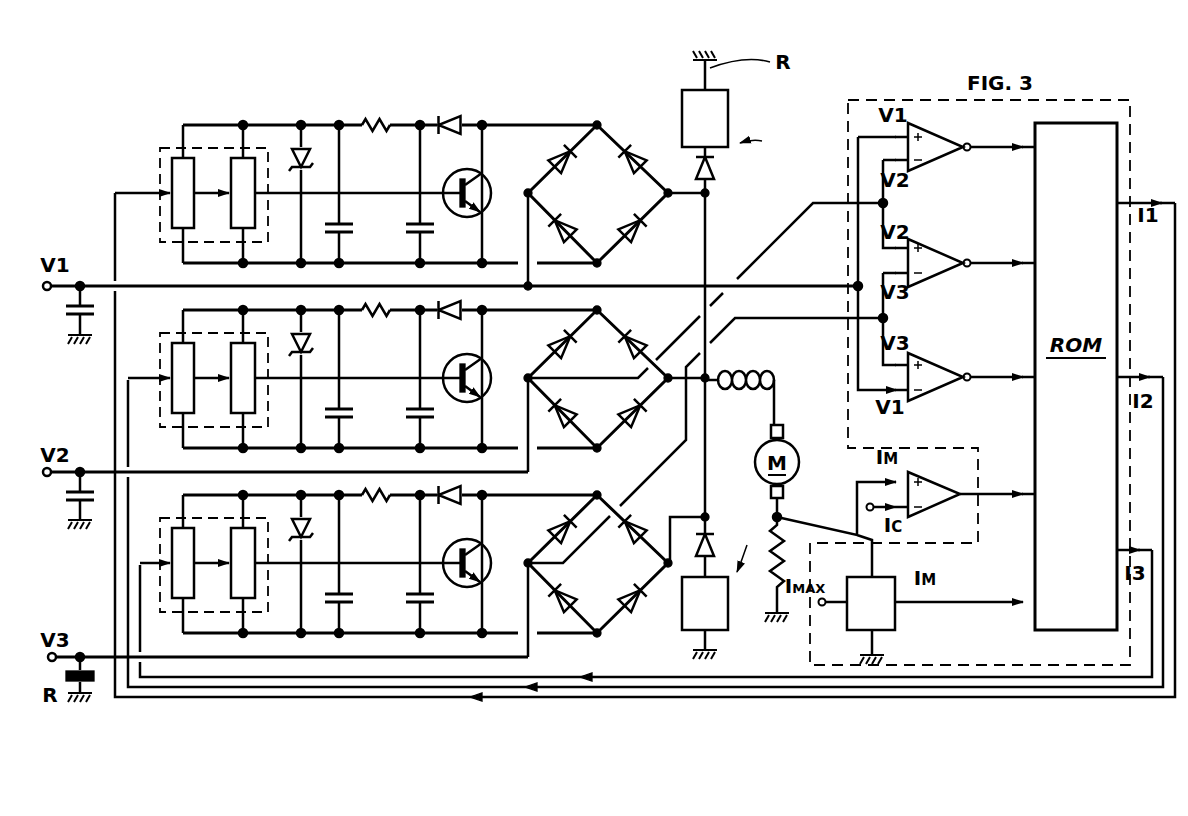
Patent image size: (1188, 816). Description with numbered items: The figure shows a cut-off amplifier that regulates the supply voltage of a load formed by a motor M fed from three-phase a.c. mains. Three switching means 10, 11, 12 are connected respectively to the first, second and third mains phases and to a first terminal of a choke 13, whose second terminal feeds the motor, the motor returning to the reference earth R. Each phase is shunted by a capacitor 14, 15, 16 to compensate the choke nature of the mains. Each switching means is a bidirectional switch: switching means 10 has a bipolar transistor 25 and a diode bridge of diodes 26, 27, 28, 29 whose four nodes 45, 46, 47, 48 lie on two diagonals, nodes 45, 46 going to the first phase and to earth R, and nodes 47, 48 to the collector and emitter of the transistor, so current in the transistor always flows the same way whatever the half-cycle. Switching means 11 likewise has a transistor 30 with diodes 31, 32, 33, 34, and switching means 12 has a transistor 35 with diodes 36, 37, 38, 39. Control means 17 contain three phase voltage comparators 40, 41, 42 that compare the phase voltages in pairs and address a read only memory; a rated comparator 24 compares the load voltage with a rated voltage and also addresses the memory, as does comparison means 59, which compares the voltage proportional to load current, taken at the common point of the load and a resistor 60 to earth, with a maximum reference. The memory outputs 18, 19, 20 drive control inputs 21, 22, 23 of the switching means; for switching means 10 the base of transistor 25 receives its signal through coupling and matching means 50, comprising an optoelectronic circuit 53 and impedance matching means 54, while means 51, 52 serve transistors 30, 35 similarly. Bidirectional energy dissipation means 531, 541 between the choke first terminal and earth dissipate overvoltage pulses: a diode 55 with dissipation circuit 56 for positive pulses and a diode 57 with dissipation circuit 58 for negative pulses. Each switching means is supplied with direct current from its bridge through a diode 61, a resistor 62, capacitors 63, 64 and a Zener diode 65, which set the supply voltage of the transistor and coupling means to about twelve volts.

The switching means 10 is at (599, 178).
The switching means 11 is at (600, 383).
The switching means 12 is at (603, 574).
The choke 13 is at (768, 372).
The shunt capacitor 14 is at (78, 318).
The shunt capacitor 15 is at (78, 502).
The shunt capacitor 16 is at (84, 654).
The control means 17 is at (848, 104).
The output of the control means 18 is at (1172, 200).
The output of the control means 19 is at (1162, 374).
The output of the control means 20 is at (1154, 547).
The control input 21 is at (113, 200).
The control input 22 is at (130, 400).
The control input 23 is at (141, 600).
The rated comparator 24 is at (945, 500).
The bipolar transistor 25 is at (470, 172).
The diode 26 is at (566, 158).
The diode 27 is at (630, 166).
The diode 28 is at (555, 228).
The diode 29 is at (640, 230).
The bipolar transistor 30 is at (445, 370).
The diode 31 is at (558, 343).
The diode 32 is at (642, 330).
The diode 33 is at (556, 411).
The diode 34 is at (626, 414).
The bipolar transistor 35 is at (445, 557).
The diode 36 is at (558, 530).
The diode 37 is at (641, 516).
The diode 38 is at (571, 598).
The diode 39 is at (632, 602).
The phase voltage comparator 40 is at (950, 155).
The phase voltage comparator 41 is at (950, 270).
The phase voltage comparator 42 is at (950, 384).
The bridge node 45 is at (528, 190).
The bridge node 46 is at (668, 188).
The bridge node 47 is at (600, 123).
The bridge node 48 is at (605, 260).
The coupling and matching means 50 is at (160, 170).
The coupling and matching means 51 is at (160, 355).
The coupling and matching means 52 is at (160, 540).
The optoelectronic circuit 53 is at (183, 158).
The matching means 54 is at (240, 160).
The diode 55 is at (712, 183).
The energy dissipation circuit 56 is at (712, 118).
The diode 57 is at (708, 527).
The energy dissipation circuit 58 is at (728, 615).
The voltage comparison means 59 is at (880, 612).
The resistor 60 is at (790, 520).
The diode 61 is at (448, 115).
The resistor 62 is at (375, 118).
The capacitor 63 is at (412, 222).
The capacitor 64 is at (348, 226).
The Zener diode 65 is at (301, 147).
The bidirectional energy dissipation means 531 is at (775, 158).
The bidirectional energy dissipation means 541 is at (762, 547).